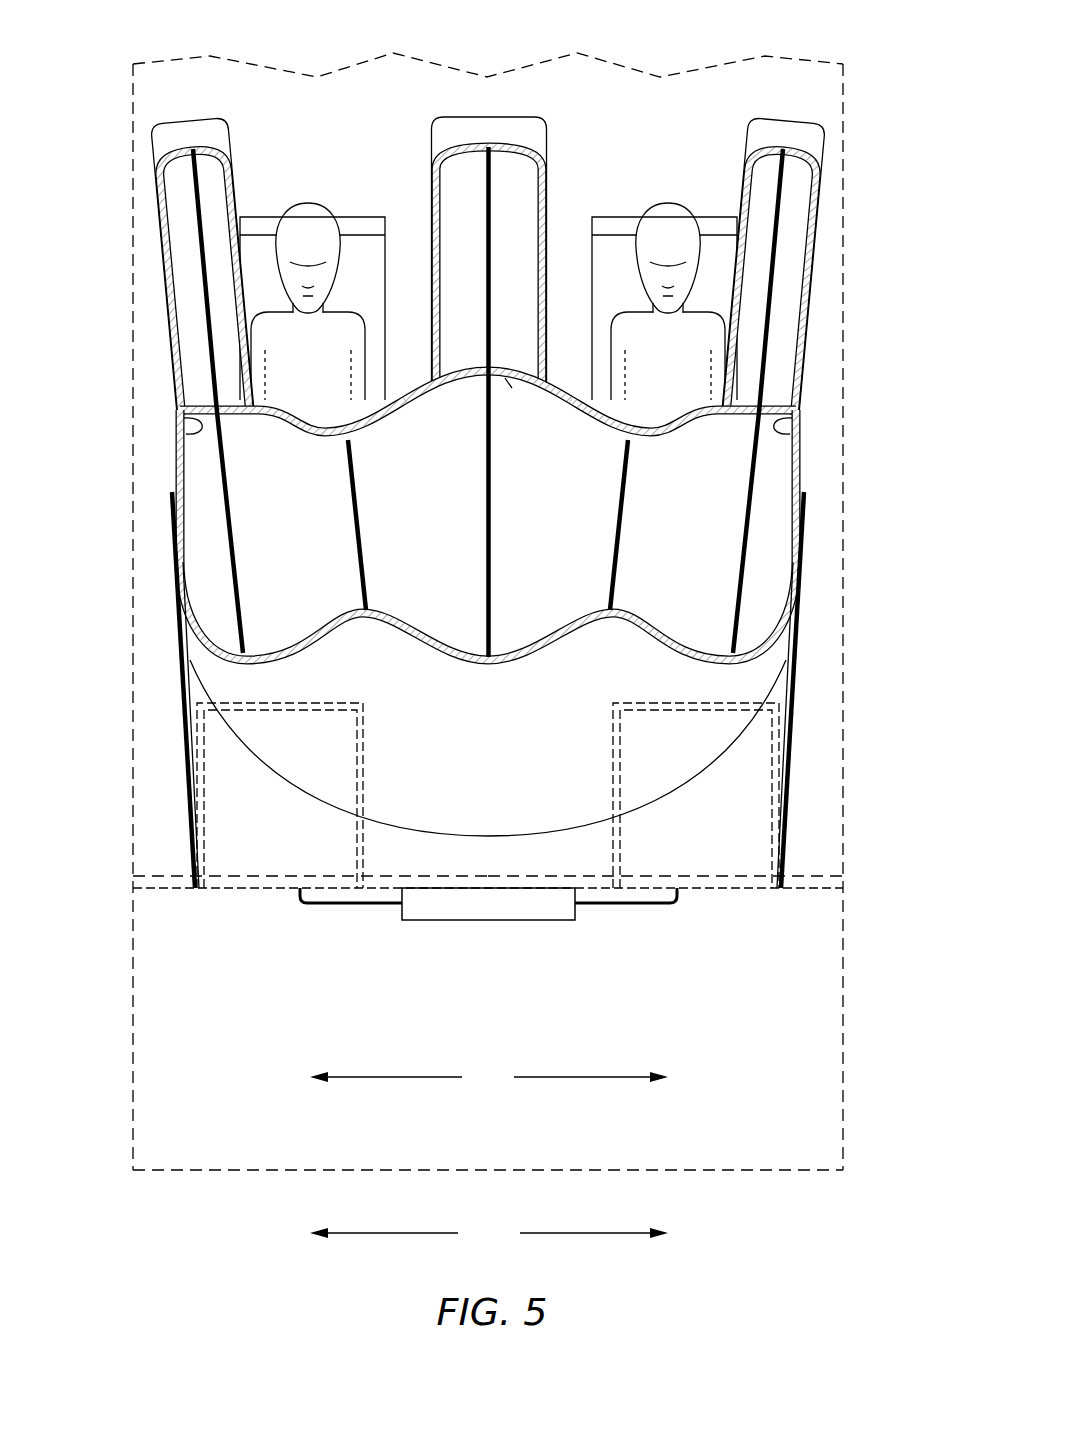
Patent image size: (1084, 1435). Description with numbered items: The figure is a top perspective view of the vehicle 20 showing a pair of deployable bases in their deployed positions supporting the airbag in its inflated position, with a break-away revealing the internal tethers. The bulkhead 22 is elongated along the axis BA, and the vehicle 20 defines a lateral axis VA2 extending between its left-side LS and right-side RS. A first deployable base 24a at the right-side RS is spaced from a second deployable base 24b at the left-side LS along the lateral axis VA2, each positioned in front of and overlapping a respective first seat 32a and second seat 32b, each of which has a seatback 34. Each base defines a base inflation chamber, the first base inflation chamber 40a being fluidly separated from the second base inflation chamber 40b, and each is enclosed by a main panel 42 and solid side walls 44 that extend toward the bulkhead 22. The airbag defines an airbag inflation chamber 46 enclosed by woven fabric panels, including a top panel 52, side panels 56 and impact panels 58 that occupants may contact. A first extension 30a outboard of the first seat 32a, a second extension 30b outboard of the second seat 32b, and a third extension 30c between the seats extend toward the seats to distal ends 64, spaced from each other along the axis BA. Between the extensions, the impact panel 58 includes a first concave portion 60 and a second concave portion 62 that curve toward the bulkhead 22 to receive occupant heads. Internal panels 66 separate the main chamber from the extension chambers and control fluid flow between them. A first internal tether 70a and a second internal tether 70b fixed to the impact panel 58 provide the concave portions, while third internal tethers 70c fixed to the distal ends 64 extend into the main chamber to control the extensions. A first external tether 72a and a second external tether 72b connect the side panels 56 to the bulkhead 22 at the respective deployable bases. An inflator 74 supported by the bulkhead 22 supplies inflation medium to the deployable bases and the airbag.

The vehicle 20 is at (900, 119).
The bulkhead 22 is at (818, 1002).
The first deployable base 24a is at (724, 868).
The second deployable base 24b is at (253, 868).
The first extension 30a is at (820, 192).
The second extension 30b is at (548, 190).
The third extension 30c is at (157, 192).
The first seat 32a is at (720, 217).
The second seat 32b is at (252, 216).
The seatback 34 is at (358, 217).
The first base inflation chamber 40a is at (712, 833).
The second base inflation chamber 40b is at (240, 823).
The main panel 42 is at (228, 699).
The side walls 44 is at (191, 773).
The airbag inflation chamber 46 is at (772, 528).
The top panel 52 is at (682, 680).
The side panels 56 is at (172, 479).
The impact panel 58 is at (381, 434).
The first concave portion 60 is at (668, 446).
The second concave portion 62 is at (306, 446).
The distal ends 64 is at (190, 128).
The internal panels 66 is at (180, 432).
The first internal tether 70a is at (620, 562).
The second internal tether 70b is at (367, 566).
The third internal tethers 70c is at (245, 610).
The first external tether 72a is at (790, 704).
The second external tether 72b is at (182, 704).
The inflator 74 is at (515, 921).
The right-side RS is at (166, 619).
The left-side LS is at (812, 619).
The axis of the bulkhead BA is at (489, 1078).
The lateral axis VA2 is at (489, 1234).